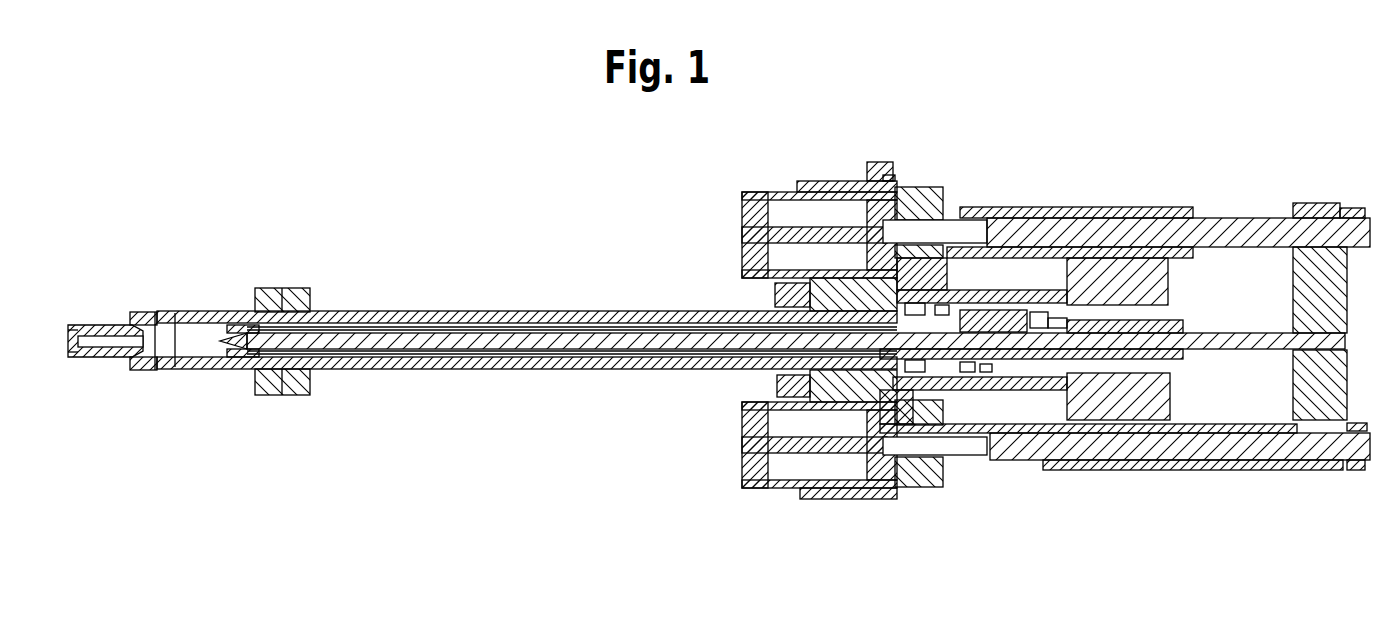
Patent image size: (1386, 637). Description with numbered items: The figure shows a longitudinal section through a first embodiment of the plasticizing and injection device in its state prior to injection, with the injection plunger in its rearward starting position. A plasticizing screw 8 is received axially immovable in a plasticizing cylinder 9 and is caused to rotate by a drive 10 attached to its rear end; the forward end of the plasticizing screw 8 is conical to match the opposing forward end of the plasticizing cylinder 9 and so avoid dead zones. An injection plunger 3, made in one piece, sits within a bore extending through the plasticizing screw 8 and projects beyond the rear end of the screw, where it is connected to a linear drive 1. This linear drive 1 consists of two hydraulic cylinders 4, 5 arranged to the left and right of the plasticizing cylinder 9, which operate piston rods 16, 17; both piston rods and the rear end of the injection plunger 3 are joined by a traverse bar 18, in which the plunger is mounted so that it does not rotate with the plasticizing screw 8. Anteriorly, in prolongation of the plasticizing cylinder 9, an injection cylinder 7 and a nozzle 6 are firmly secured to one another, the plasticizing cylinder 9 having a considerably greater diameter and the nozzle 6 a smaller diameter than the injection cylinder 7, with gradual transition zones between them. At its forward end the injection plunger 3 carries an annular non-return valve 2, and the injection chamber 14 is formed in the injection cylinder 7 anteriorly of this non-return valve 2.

The linear drive 1 is at (1041, 180).
The non-return valve 2 is at (234, 352).
The injection plunger 3 is at (542, 348).
The hydraulic cylinder 4 is at (785, 489).
The hydraulic cylinder 5 is at (790, 191).
The nozzle 6 is at (118, 328).
The injection cylinder 7 is at (220, 322).
The plasticizing screw 8 is at (672, 330).
The plasticizing cylinder 9 is at (634, 369).
The drive 10 is at (1166, 396).
The injection chamber 14 is at (190, 346).
The piston rod 16 is at (1228, 228).
The piston rod 17 is at (1032, 447).
The traverse bar 18 is at (1318, 204).